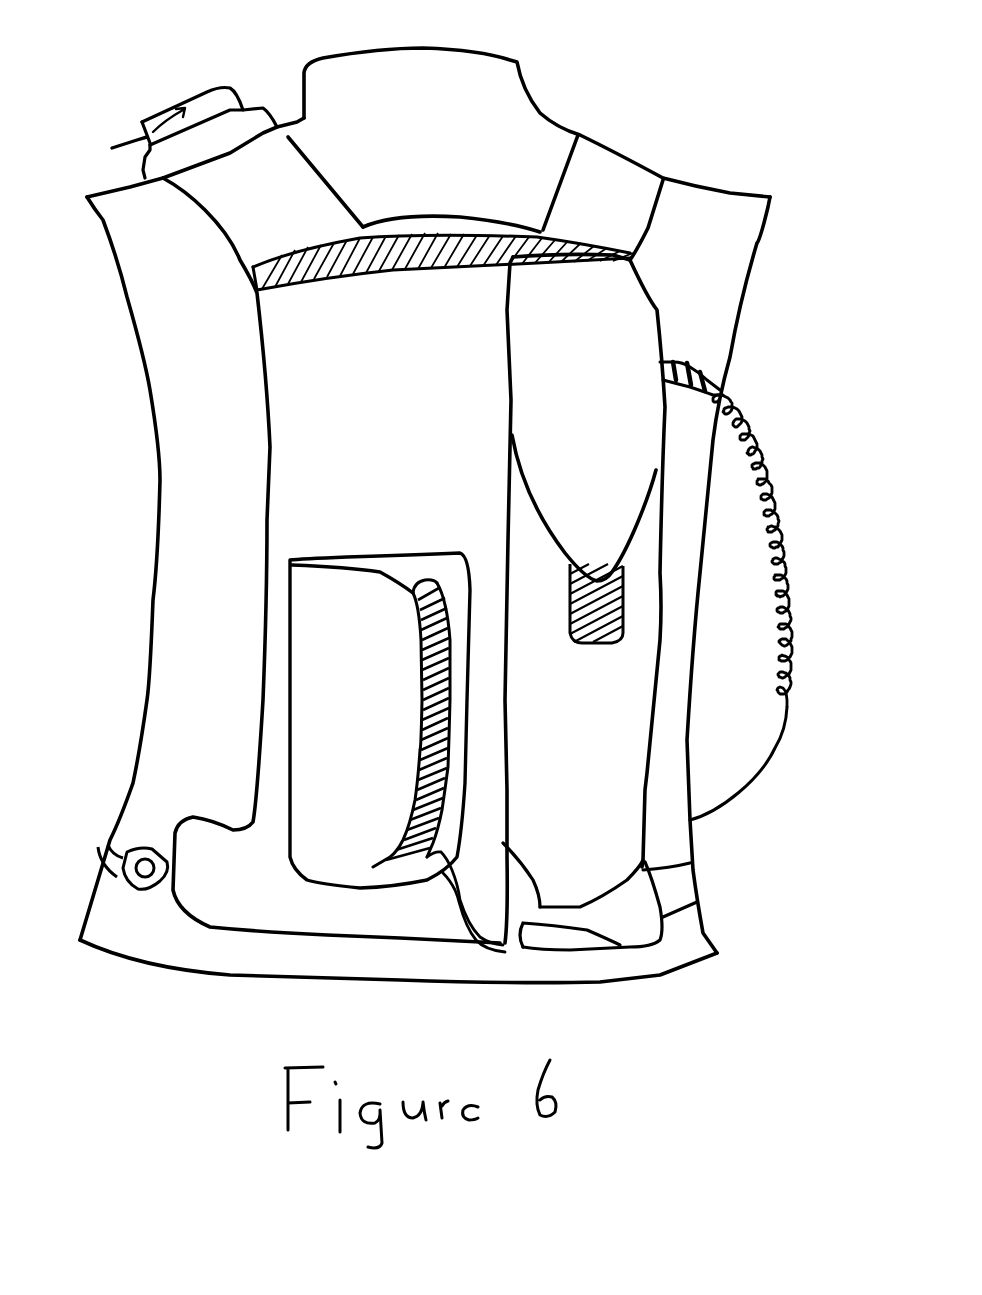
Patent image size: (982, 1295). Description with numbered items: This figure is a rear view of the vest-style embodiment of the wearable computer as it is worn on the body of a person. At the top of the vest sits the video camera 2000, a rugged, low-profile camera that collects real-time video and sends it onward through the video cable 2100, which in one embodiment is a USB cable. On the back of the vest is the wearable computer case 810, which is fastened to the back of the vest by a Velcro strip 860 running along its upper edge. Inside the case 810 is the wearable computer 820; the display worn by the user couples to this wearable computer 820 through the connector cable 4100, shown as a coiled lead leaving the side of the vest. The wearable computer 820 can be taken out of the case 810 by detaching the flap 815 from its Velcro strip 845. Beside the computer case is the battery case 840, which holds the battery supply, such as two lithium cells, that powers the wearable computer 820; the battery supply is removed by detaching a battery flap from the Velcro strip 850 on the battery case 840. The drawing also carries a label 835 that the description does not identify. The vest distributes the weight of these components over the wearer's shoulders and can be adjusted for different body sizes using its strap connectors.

The video camera 2000 is at (207, 88).
The video cable 2100 is at (112, 148).
The Velcro strip 860 is at (393, 270).
The flap 815 is at (517, 368).
The Velcro strip 845 is at (590, 644).
The connector cable 4100 is at (789, 547).
The pocket 835 is at (310, 825).
The Velcro strip 850 is at (423, 580).
The battery case 840 is at (400, 880).
The wearable computer case 810 is at (630, 860).
The wearable computer 820 is at (630, 930).